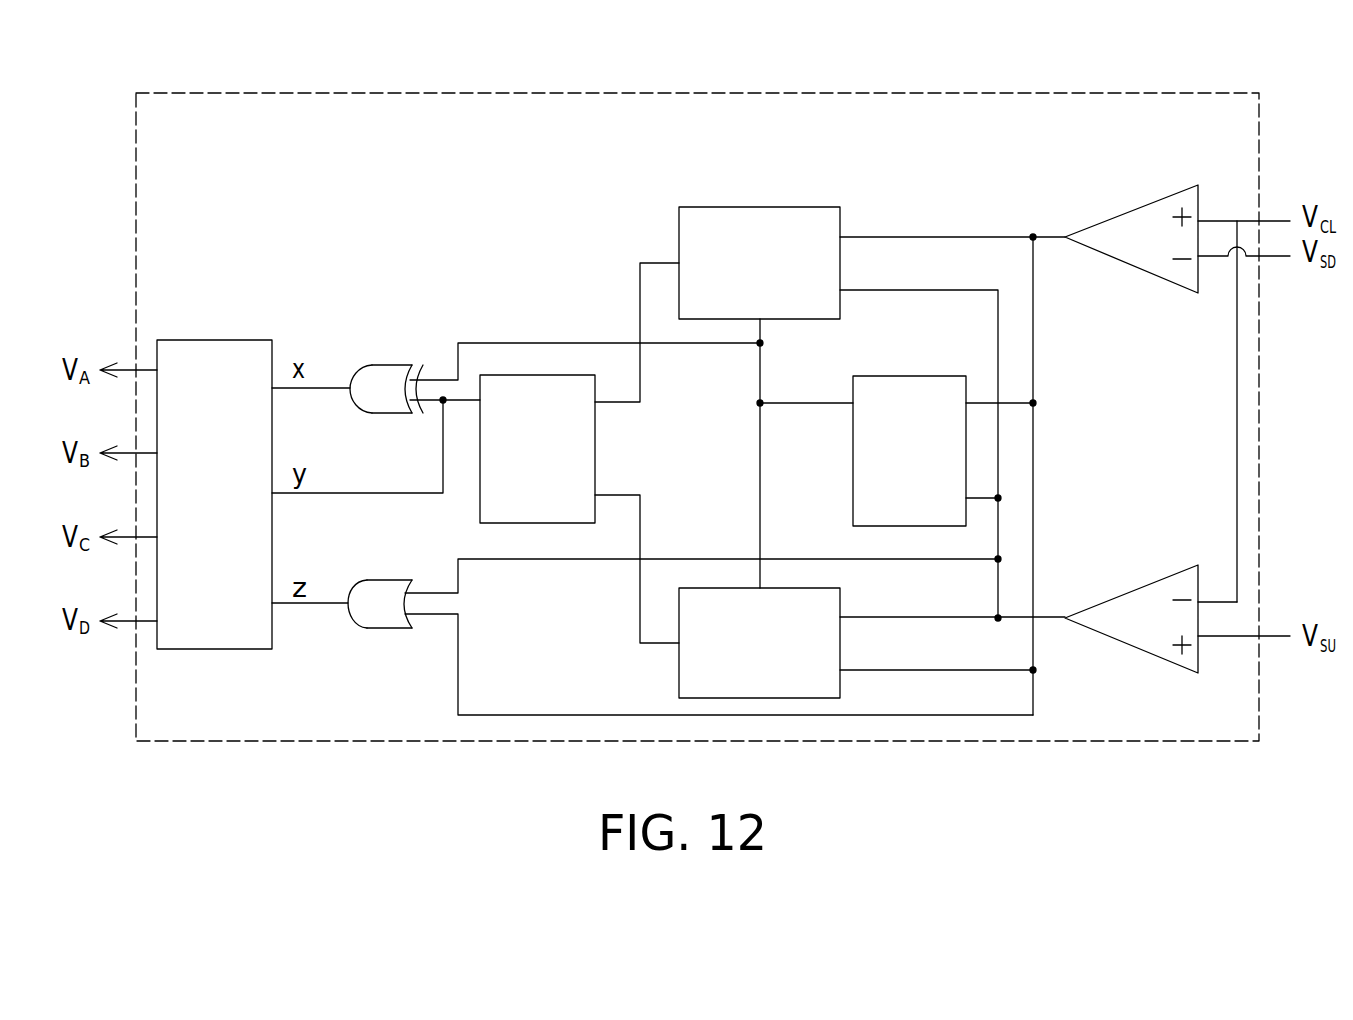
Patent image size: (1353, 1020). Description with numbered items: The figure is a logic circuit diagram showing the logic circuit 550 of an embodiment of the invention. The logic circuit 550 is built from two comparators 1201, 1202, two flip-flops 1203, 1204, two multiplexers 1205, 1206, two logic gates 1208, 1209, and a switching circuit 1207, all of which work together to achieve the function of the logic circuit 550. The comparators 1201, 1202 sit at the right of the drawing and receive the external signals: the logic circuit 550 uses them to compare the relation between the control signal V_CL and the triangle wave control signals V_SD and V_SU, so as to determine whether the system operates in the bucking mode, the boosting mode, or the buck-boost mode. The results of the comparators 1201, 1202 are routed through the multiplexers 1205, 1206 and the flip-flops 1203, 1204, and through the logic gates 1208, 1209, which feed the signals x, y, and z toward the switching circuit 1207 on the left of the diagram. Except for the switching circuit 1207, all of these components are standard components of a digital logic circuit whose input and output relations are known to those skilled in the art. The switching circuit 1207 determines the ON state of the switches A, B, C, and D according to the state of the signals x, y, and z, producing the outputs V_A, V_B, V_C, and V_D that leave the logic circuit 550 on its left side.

The logic circuit 550 is at (732, 93).
The comparator 1201 is at (1133, 207).
The comparator 1202 is at (1132, 587).
The flip-flop 1203 is at (907, 376).
The flip-flop 1204 is at (538, 375).
The multiplexer 1205 is at (763, 207).
The multiplexer 1206 is at (679, 670).
The switching circuit 1207 is at (200, 340).
The logic gate 1208 is at (393, 365).
The logic gate 1209 is at (393, 630).